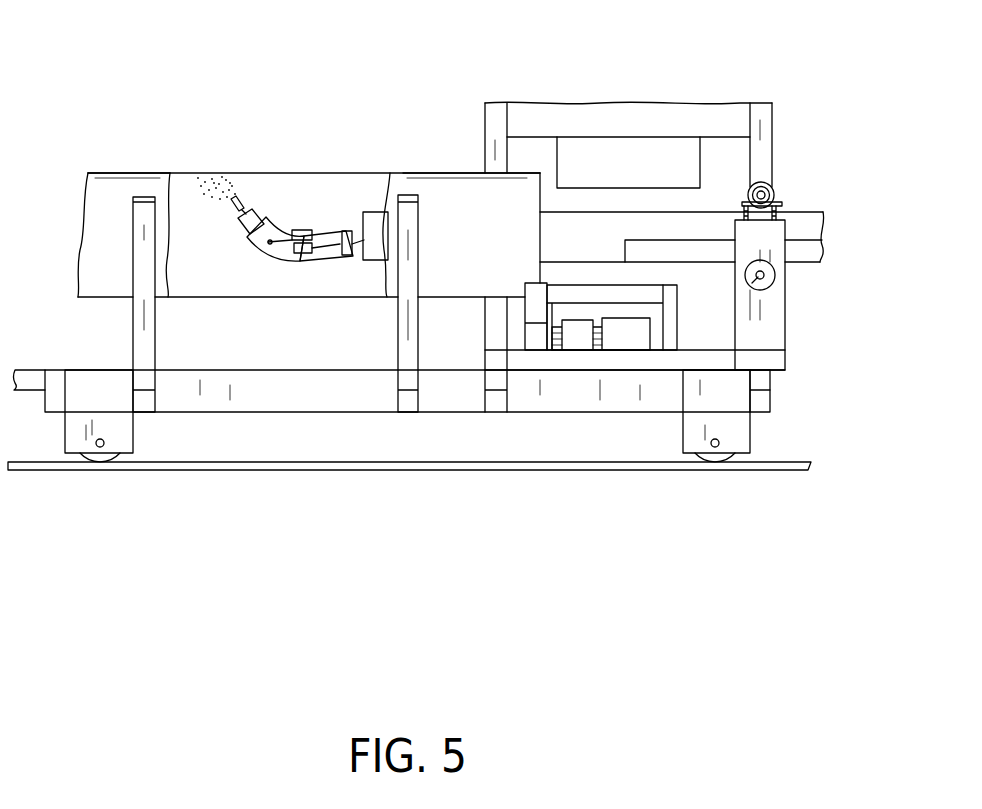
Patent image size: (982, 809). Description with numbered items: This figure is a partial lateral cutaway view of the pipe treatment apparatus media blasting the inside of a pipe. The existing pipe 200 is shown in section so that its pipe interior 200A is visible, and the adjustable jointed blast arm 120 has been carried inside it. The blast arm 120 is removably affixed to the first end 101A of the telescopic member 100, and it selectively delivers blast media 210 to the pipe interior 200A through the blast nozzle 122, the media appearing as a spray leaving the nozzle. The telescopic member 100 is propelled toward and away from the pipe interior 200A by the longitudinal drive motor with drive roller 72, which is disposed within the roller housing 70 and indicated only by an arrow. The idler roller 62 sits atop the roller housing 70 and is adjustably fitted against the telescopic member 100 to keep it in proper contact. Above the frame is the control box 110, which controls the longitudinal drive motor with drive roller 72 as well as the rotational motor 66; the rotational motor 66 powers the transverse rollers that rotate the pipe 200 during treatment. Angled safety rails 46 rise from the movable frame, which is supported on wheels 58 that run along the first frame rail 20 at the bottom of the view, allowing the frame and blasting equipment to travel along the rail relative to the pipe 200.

The first frame rail 20 is at (789, 471).
The safety rail 46 is at (133, 325).
The wheels 58 is at (100, 460).
The idler roller 62 is at (761, 182).
The rotational motor 66 is at (622, 337).
The roller housing 70 is at (787, 325).
The longitudinal drive motor with drive roller 72 is at (787, 250).
The telescopic member 100 is at (800, 212).
The first end 101A is at (378, 232).
The control box 110 is at (600, 113).
The adjustable jointed blast arm 120 is at (299, 190).
The blast nozzle 122 is at (243, 200).
The pipe 200 is at (108, 173).
The pipe interior 200A is at (401, 192).
The blast media 210 is at (222, 173).